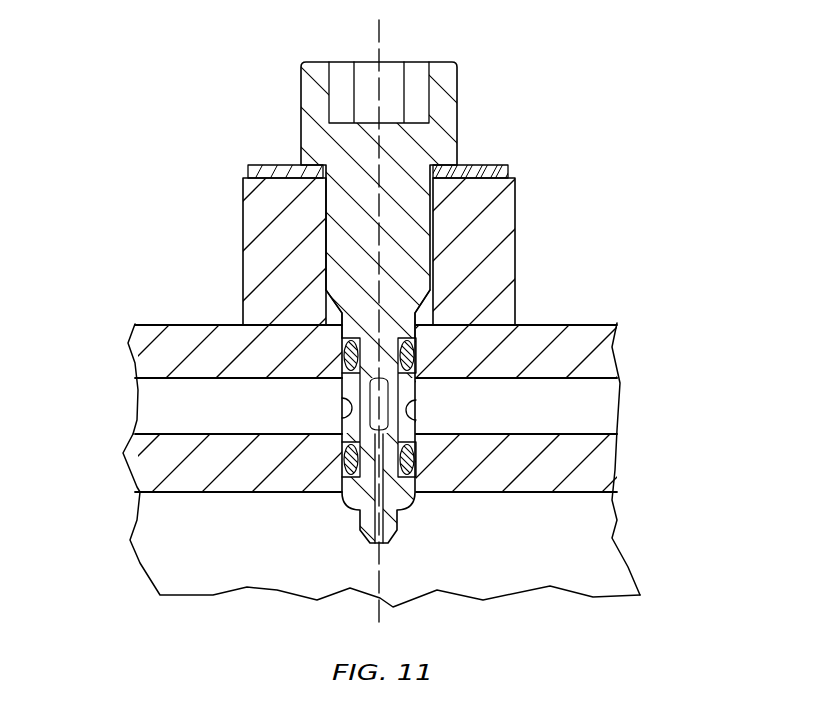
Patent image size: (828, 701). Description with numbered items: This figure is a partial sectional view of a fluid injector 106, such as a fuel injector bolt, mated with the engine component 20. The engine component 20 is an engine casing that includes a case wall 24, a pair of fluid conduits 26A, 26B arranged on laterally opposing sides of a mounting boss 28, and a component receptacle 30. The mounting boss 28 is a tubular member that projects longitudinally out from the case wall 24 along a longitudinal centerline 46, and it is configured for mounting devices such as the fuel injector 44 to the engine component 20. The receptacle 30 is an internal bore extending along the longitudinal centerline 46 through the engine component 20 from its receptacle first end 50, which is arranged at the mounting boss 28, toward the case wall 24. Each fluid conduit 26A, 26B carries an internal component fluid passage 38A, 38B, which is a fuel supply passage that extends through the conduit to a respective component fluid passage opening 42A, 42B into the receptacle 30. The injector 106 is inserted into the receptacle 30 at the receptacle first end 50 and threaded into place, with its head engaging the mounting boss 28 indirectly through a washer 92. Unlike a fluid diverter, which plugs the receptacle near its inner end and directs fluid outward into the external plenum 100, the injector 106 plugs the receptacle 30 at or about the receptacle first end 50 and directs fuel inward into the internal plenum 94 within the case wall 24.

The external plenum 100 is at (167, 115).
The internal plenum 94 is at (575, 563).
The longitudinal centerline 46 is at (380, 27).
The fuel injector 44 is at (462, 87).
The fluid injector 106 is at (414, 294).
The component receptacle 30 is at (332, 313).
The mounting boss 28 is at (238, 232).
The washer 92 is at (510, 173).
The engine component 20 is at (414, 323).
The receptacle first end 50 is at (435, 173).
The fluid conduit 26A is at (162, 323).
The fluid conduit 26B is at (597, 322).
The case wall 24 is at (182, 497).
The component fluid passage 38A is at (162, 406).
The component fluid passage 38B is at (597, 406).
The component fluid passage opening 42A is at (343, 395).
The component fluid passage opening 42B is at (413, 423).